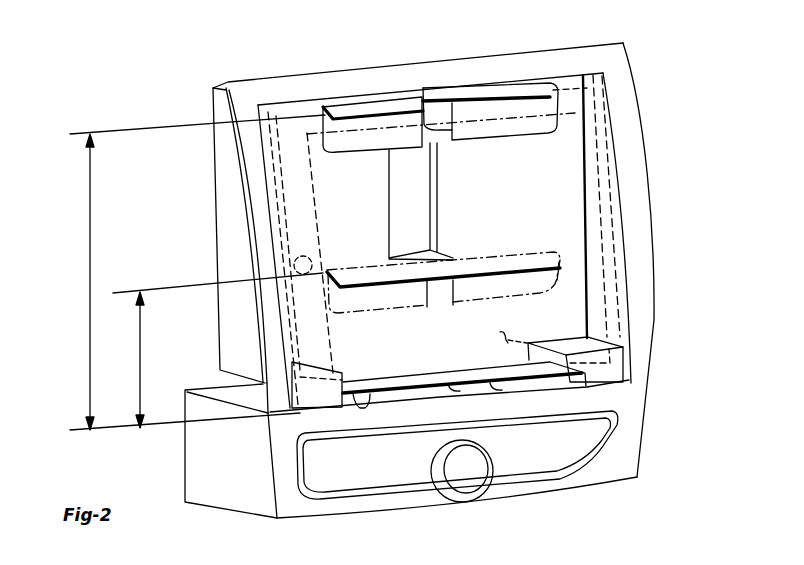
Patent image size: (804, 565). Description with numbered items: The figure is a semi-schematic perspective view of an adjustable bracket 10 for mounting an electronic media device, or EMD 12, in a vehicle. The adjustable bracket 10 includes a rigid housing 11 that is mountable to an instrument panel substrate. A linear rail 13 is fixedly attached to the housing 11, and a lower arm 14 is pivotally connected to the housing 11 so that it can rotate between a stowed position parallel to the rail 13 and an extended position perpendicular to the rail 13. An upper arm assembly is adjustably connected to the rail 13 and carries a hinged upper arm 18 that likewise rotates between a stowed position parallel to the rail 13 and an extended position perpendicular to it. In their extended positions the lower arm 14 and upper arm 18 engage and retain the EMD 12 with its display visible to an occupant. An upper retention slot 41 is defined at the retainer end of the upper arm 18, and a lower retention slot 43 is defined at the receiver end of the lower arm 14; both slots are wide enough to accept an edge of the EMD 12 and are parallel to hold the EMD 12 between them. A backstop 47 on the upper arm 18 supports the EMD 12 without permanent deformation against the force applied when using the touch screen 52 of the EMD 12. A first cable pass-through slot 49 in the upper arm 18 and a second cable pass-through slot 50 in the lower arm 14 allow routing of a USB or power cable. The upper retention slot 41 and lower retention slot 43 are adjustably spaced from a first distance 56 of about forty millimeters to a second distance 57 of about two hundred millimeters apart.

The adjustable bracket 10 is at (549, 143).
The rigid housing 11 is at (653, 222).
The electronic media device (EMD) 12 is at (611, 294).
The linear rail 13 is at (392, 205).
The lower arm 14 is at (410, 397).
The upper arm 18 is at (447, 98).
The upper retention slot 41 is at (521, 93).
The lower retention slot 43 is at (537, 383).
The backstop 47 is at (360, 139).
The first cable pass-through slot 49 is at (427, 118).
The second cable pass-through slot 50 is at (470, 385).
The touch screen 52 is at (581, 393).
The first distance 56 is at (140, 352).
The second distance 57 is at (90, 256).